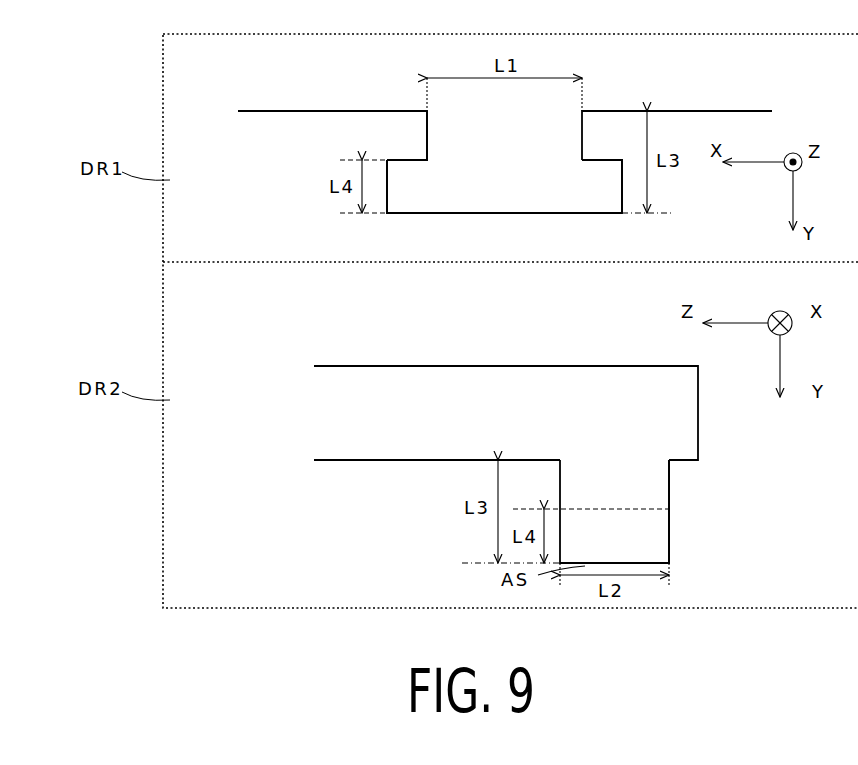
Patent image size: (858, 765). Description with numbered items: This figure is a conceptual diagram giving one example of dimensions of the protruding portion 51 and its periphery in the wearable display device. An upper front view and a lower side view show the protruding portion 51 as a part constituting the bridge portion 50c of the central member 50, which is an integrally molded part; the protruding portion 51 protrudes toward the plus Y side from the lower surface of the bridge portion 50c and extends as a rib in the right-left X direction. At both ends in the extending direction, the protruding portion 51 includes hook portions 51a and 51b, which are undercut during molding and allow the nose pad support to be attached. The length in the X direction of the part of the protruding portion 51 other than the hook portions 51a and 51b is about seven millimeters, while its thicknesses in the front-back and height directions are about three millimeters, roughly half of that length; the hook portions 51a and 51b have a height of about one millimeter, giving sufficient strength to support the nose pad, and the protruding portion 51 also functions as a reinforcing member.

The central member 50 is at (262, 90).
The bridge portion 50c is at (418, 84).
The protruding portion 51 is at (476, 213).
The hook portion 51a is at (596, 213).
The hook portion 51b is at (412, 213).